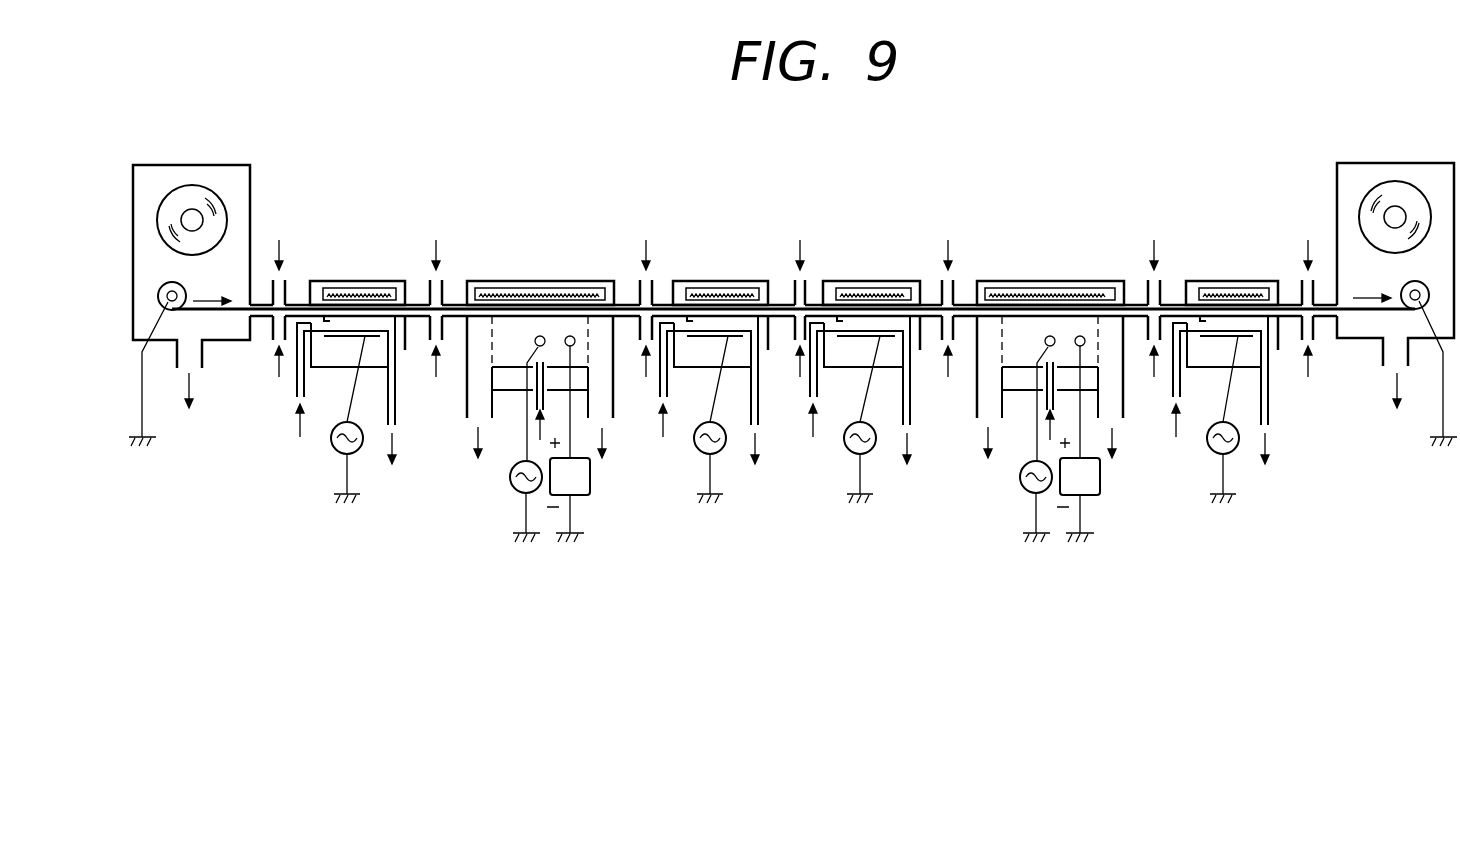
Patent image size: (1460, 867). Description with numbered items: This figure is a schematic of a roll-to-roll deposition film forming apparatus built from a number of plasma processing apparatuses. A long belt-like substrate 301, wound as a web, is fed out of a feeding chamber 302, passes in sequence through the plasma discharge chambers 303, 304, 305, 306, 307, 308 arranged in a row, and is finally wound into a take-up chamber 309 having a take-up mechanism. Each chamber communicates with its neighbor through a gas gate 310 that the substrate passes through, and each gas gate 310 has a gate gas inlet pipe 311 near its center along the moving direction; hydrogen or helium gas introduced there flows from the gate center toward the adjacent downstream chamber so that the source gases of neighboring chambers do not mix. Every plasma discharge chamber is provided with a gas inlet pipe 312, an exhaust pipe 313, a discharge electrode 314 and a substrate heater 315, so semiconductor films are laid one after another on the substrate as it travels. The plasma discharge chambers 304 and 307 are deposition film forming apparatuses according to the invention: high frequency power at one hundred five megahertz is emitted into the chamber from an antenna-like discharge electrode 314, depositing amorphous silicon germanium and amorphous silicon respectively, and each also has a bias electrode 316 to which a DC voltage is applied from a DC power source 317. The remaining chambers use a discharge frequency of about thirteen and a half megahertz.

The belt-like substrate 301 is at (242, 306).
The feeding chamber 302 is at (170, 165).
The plasma discharge chamber 303 is at (347, 281).
The plasma discharge chamber 304 is at (520, 281).
The plasma discharge chamber 305 is at (710, 281).
The plasma discharge chamber 306 is at (860, 281).
The plasma discharge chamber 307 is at (1030, 281).
The plasma discharge chamber 308 is at (1221, 281).
The take-up chamber 309 is at (1425, 163).
The gas gate 310 is at (298, 304).
The gate gas inlet pipe 311 is at (259, 342).
The gas inlet pipe 312 is at (294, 404).
The exhaust pipe 313 is at (178, 368).
The discharge electrode 314 is at (332, 338).
The substrate heater 315 is at (385, 293).
The bias electrode 316 is at (568, 336).
The DC power source 317 is at (583, 495).